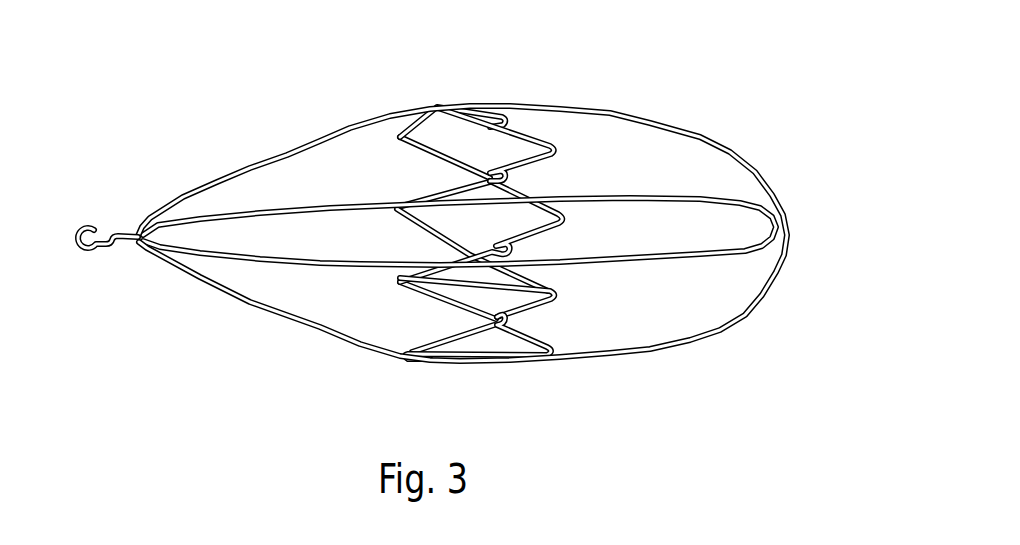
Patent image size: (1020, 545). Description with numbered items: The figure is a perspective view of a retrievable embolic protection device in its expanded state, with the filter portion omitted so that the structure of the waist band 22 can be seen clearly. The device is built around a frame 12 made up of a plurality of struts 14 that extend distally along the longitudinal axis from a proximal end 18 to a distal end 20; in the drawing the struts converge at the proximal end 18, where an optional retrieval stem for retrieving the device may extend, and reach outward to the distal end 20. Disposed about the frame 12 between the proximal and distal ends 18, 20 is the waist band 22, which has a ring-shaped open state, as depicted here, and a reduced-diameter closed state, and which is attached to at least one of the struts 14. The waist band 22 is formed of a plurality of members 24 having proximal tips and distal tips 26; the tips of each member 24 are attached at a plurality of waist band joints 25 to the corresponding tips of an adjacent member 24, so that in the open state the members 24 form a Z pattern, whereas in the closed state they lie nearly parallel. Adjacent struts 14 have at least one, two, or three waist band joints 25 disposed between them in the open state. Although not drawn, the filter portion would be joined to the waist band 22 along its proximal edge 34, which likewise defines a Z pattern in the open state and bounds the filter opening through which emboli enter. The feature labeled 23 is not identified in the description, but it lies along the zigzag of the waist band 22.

The frame 12 is at (248, 302).
The struts 14 is at (282, 152).
The proximal end 18 is at (135, 248).
The distal end 20 is at (782, 214).
The waist band 22 is at (489, 229).
The zigzag strut 23 is at (371, 128).
The members 24 is at (528, 133).
The waist band joints 25 is at (398, 282).
The distal tips 26 is at (552, 143).
The proximal edge 34 is at (422, 293).